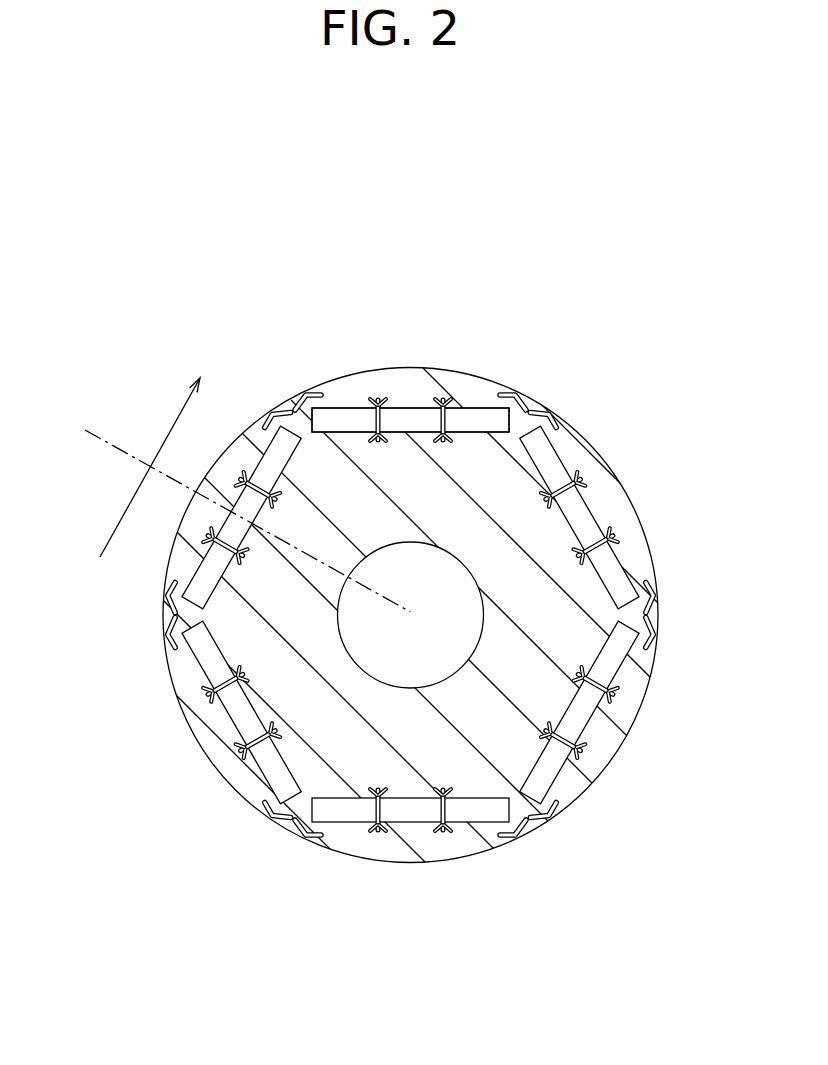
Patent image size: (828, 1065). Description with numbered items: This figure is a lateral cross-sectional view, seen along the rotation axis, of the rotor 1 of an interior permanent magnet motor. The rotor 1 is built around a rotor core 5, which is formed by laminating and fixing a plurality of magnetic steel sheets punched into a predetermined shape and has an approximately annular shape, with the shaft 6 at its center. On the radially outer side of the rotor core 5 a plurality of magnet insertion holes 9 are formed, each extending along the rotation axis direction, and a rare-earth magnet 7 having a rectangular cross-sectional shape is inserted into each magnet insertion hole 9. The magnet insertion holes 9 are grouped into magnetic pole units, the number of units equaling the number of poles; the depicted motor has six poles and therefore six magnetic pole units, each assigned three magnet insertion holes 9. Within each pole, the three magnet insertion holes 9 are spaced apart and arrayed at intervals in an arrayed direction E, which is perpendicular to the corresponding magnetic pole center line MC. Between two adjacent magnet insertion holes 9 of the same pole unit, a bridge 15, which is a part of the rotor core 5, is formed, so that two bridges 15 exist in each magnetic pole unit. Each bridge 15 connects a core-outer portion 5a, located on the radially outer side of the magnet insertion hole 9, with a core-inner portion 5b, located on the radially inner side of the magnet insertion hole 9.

The rotor 1 is at (605, 342).
The rotor core 5 is at (500, 285).
The core-outer portion 5a is at (412, 462).
The core-inner portion 5b is at (418, 422).
The shaft 6 is at (448, 590).
The rare-earth magnet 7 is at (345, 416).
The magnet insertion hole 9 is at (307, 402).
The bridge 15 is at (446, 417).
The magnetic pole center line MC is at (90, 428).
The arrayed direction E is at (118, 521).